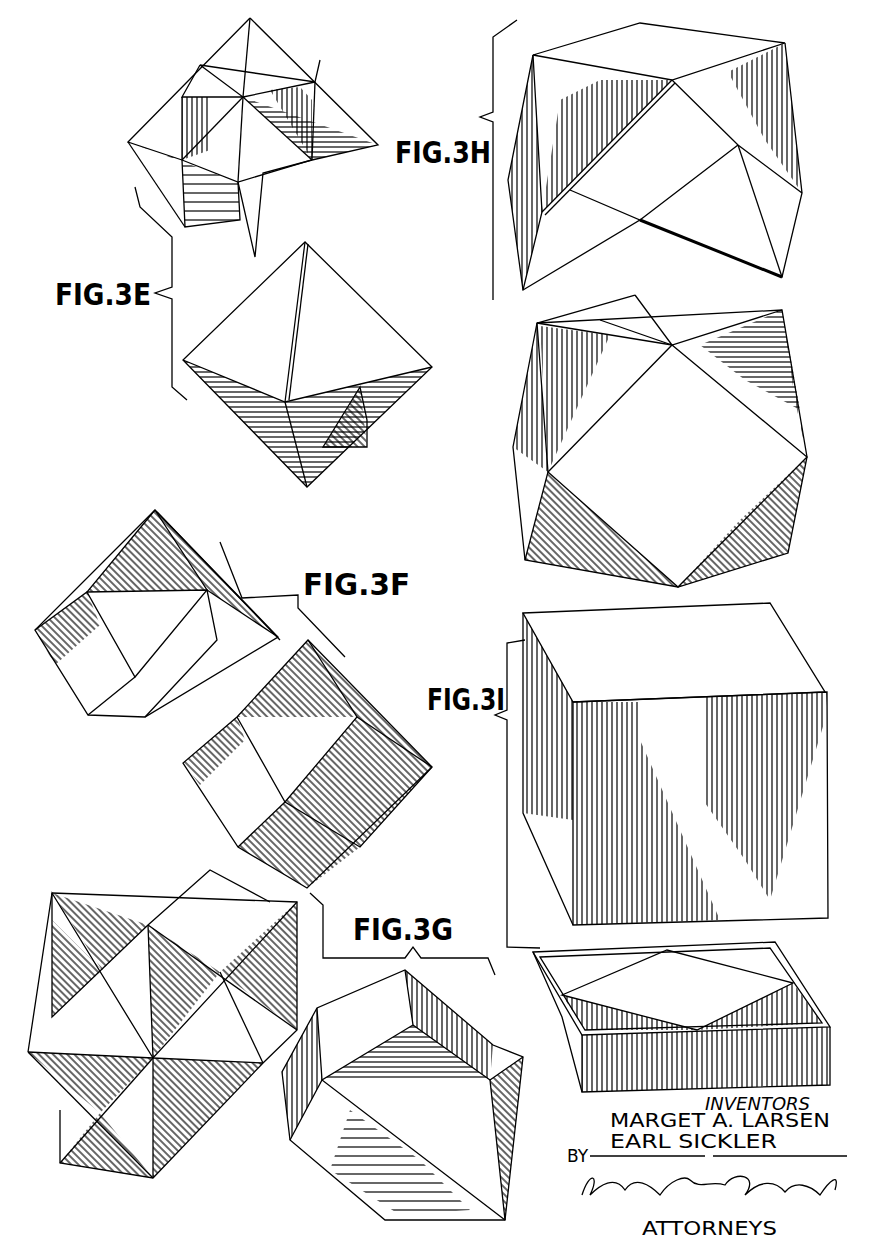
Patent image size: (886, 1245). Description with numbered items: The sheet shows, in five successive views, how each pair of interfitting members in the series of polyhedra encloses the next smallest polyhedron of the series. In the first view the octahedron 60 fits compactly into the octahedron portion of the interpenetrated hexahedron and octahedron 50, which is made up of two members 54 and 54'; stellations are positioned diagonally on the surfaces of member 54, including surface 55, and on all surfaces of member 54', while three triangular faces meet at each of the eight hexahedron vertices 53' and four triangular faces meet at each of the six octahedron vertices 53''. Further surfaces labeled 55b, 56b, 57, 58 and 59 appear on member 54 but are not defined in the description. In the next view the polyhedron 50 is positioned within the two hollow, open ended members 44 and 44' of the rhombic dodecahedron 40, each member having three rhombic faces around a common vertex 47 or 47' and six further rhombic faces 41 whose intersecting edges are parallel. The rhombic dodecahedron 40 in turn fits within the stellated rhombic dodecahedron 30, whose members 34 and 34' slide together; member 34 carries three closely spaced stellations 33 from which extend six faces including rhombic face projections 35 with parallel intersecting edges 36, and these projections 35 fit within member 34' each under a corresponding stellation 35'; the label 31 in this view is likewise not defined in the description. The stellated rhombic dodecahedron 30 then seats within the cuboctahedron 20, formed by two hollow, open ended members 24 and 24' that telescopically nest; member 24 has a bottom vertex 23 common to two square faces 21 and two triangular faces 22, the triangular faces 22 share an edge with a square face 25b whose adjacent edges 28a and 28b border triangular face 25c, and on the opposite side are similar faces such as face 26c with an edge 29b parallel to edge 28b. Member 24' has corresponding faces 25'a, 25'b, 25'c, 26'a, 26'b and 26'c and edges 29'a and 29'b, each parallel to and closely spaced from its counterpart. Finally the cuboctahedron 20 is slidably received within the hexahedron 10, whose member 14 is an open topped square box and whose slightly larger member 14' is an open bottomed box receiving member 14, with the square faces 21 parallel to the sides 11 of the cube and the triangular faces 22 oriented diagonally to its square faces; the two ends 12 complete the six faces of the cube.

In FIG. 3I, the hexahedron 10 is at (800, 614).
In FIG. 3I, the sides 11 is at (605, 1095).
In FIG. 3I, the ends 12 is at (800, 920).
In FIG. 3I, the member 14 is at (833, 1016).
In FIG. 3I, the member 14' is at (831, 675).
In FIG. 3H, the cuboctahedron 20 is at (788, 35).
In FIG. 3I, the cuboctahedron 20 is at (785, 982).
In FIG. 3I, the square faces 21 is at (640, 475).
In FIG. 3I, the triangular faces 22 is at (595, 565).
In FIG. 3I, the bottom vertex 23 is at (680, 590).
In FIG. 3I, the member 24 is at (671, 439).
In FIG. 3H, the member 24' is at (742, 24).
In FIG. 3I, the square face 25b is at (520, 485).
In FIG. 3I, the triangular face 25c is at (610, 410).
In FIG. 3H, the triangular face 25'a is at (579, 219).
In FIG. 3H, the square face 25'b is at (481, 211).
In FIG. 3H, the triangular face 25'c is at (636, 153).
In FIG. 3I, the triangular face 26c is at (780, 405).
In FIG. 3H, the face 26'a is at (729, 209).
In FIG. 3H, the face 26'b is at (810, 244).
In FIG. 3H, the face 26'c is at (815, 130).
In FIG. 3I, the edge 28a is at (520, 405).
In FIG. 3I, the edge 28b is at (555, 326).
In FIG. 3I, the edge 29b is at (795, 332).
In FIG. 3H, the edge 29'a is at (740, 288).
In FIG. 3H, the edge 29'b is at (821, 69).
In FIG. 3G, the stellated rhombic dodecahedron 30 is at (137, 880).
In FIG. 3I, the stellated rhombic dodecahedron 30 is at (683, 322).
In FIG. 3G, the wedge block 31 is at (470, 1015).
In FIG. 3G, the stellations 33 is at (45, 908).
In FIG. 3G, the member 34 is at (333, 1220).
In FIG. 3G, the member 34' is at (160, 1206).
In FIG. 3G, the rhombic face projections 35 is at (486, 1082).
In FIG. 3G, the stellation 35' is at (239, 1012).
In FIG. 3G, the intersecting edges 36 is at (360, 1128).
In FIG. 3F, the rhombic dodecahedron 40 is at (135, 506).
In FIG. 3G, the rhombic dodecahedron 40 is at (358, 1000).
In FIG. 3F, the rhombic faces 41 is at (388, 700).
In FIG. 3F, the member 44 is at (307, 757).
In FIG. 3F, the member 44' is at (265, 544).
In FIG. 3F, the common vertex 47 is at (391, 854).
In FIG. 3F, the common vertex 47' is at (72, 544).
In FIG. 3E, the interpenetrated hexahedron and octahedron 50 is at (342, 82).
In FIG. 3F, the interpenetrated hexahedron and octahedron 50 is at (237, 715).
In FIG. 3E, the vertices 53' is at (453, 364).
In FIG. 3E, the vertices 53'' is at (339, 504).
In FIG. 3E, the member 54 is at (307, 349).
In FIG. 3E, the member 54' is at (163, 56).
In FIG. 3E, the surface 55 is at (400, 395).
In FIG. 3E, the lower left face 55b is at (248, 414).
In FIG. 3E, the upper right face 56b is at (372, 330).
In FIG. 3E, the lower right face 57 is at (342, 460).
In FIG. 3E, the lower left edge 58 is at (262, 452).
In FIG. 3E, the upper right edge 59 is at (365, 292).
In FIG. 3E, the octahedron 60 is at (242, 322).